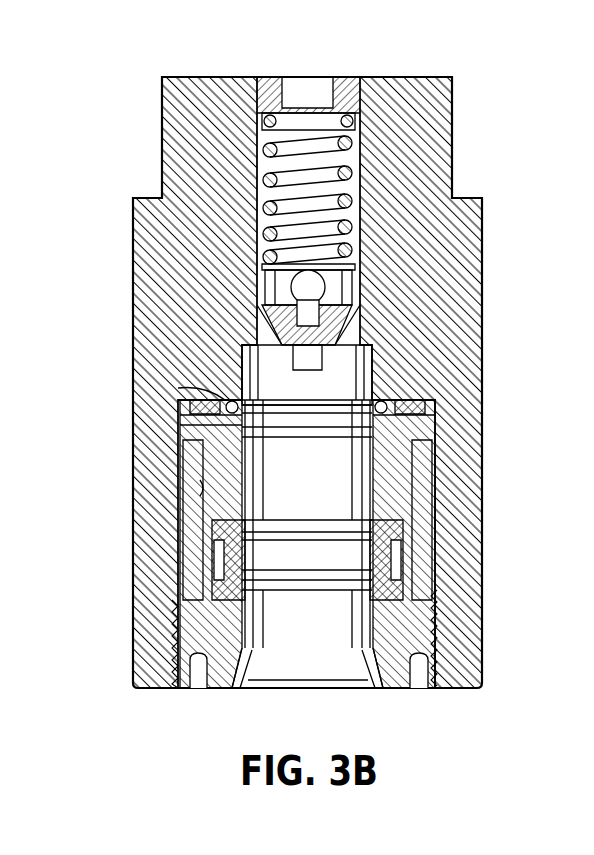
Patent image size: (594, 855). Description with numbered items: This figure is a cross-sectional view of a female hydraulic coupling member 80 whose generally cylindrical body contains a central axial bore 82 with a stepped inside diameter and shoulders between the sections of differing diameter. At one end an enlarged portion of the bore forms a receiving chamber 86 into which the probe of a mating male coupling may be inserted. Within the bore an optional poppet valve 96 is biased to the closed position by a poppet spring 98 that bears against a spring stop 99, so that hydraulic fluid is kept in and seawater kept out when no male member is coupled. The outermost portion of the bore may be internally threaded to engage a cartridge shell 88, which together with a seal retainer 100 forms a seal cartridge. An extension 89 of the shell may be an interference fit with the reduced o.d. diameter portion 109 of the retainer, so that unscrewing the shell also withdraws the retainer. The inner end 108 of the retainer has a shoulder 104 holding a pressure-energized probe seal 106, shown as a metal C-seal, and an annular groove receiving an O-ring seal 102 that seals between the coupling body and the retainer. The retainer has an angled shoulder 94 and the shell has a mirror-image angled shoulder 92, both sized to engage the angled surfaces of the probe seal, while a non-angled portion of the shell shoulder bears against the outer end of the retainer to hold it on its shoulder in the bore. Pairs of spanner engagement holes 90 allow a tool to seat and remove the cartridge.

The female coupling member 80 is at (482, 128).
The central axial bore 82 is at (365, 157).
The receiving chamber 86 is at (323, 630).
The cartridge shell 88 is at (420, 640).
The extension 89 is at (425, 473).
The spanner engagement holes 90 is at (200, 672).
The angled shoulder 92 is at (435, 593).
The angled shoulder 94 is at (405, 527).
The poppet valve 96 is at (355, 347).
The poppet spring 98 is at (350, 192).
The spring stop 99 is at (345, 95).
The seal retainer 100 is at (378, 428).
The O-ring seal 102 is at (400, 408).
The shoulder 104 is at (198, 432).
The pressure-energized probe seal 106 is at (385, 400).
The inner end 108 is at (190, 400).
The reduced o.d. diameter portion 109 is at (196, 487).